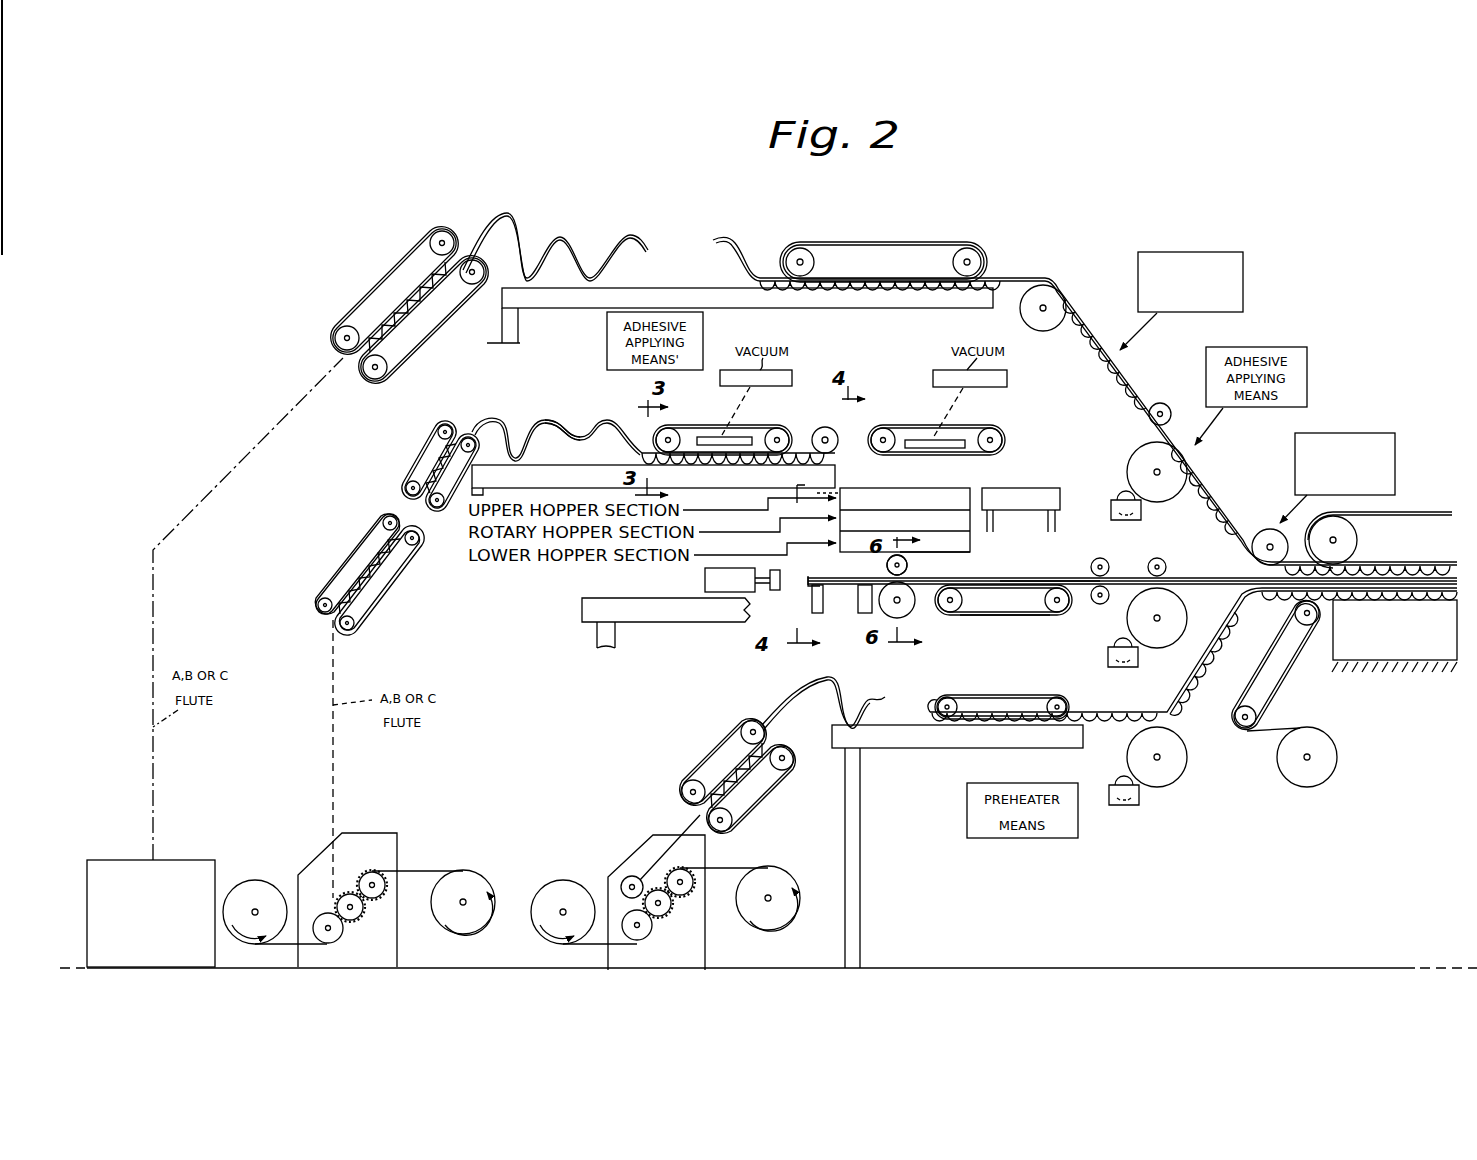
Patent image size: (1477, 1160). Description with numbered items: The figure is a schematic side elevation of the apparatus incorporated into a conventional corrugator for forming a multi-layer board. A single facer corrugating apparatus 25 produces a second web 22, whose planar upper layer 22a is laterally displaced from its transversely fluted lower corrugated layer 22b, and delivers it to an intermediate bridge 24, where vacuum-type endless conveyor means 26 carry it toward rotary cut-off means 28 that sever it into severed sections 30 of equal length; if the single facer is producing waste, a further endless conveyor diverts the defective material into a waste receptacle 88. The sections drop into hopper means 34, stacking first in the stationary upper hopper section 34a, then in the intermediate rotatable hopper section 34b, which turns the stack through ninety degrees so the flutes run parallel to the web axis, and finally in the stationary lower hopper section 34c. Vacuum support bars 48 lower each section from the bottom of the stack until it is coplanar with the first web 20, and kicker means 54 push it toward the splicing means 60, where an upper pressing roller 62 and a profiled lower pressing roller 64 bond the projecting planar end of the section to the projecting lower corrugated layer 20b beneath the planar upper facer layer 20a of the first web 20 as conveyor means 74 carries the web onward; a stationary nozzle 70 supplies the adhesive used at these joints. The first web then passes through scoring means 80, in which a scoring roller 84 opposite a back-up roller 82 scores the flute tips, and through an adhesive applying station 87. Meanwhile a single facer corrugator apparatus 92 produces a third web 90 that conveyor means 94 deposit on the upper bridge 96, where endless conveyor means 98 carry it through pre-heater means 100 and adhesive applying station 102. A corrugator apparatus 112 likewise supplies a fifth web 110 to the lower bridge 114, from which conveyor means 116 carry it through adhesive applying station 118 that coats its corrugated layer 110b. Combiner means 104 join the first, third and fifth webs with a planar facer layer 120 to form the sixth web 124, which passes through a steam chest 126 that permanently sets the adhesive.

The first web 20 is at (970, 573).
The planar upper facer layer 20a is at (1053, 577).
The lower corrugated layer 20b is at (993, 584).
The second web 22 is at (463, 412).
The planar upper layer 22a is at (600, 418).
The lower corrugated layer 22b is at (600, 423).
The intermediate bridge 24 is at (575, 470).
The single facer corrugating apparatus 25 is at (393, 847).
The endless conveyor means 26 is at (713, 433).
The rotary cut-off means 28 is at (817, 430).
The severed sections 30 is at (802, 590).
The hopper means 34 is at (915, 508).
The upper hopper section 34a is at (894, 507).
The intermediate rotatable hopper section 34b is at (857, 529).
The lower hopper section 34c is at (937, 551).
The vacuum support bars 48 is at (822, 607).
The kicker means 54 is at (717, 585).
The splicing means 60 is at (877, 572).
The upper pressing roller 62 is at (907, 567).
The lower pressing roller 64 is at (913, 613).
The stationary nozzle 70 is at (1313, 551).
The conveyor means 74 is at (1040, 617).
The scoring means 80 is at (1120, 570).
The back-up roller 82 is at (1098, 558).
The scoring roller 84 is at (1100, 604).
The adhesive applying station 87 is at (1188, 600).
The waste receptacle 88 is at (1030, 512).
The third web 90 is at (215, 492).
The single facer corrugator apparatus 92 is at (197, 860).
The conveyor means 94 is at (343, 357).
The upper bridge 96 is at (572, 300).
The endless conveyor means 98 is at (918, 233).
The pre-heater means 100 is at (1243, 270).
The adhesive applying station 102 is at (1133, 437).
The combiner means 104 is at (1397, 446).
The fifth web 110 is at (687, 818).
The corrugated layer 110b is at (1030, 723).
The corrugator apparatus 112 is at (688, 943).
The lower bridge 114 is at (913, 737).
The conveyor means 116 is at (985, 697).
The adhesive applying station 118 is at (1178, 773).
The planar facer layer 120 is at (1253, 677).
The sixth web 124 is at (1382, 560).
The steam chest 126 is at (1407, 660).